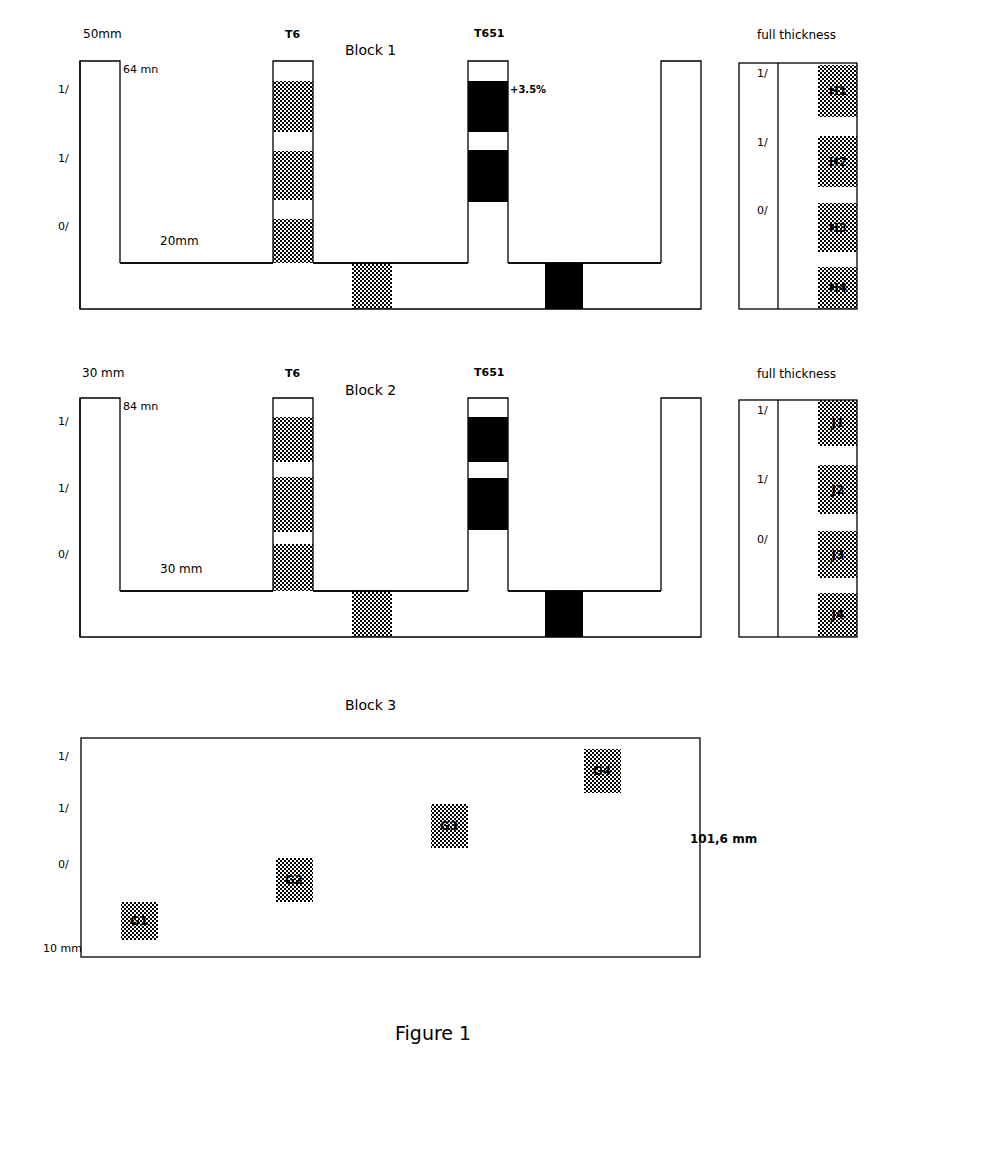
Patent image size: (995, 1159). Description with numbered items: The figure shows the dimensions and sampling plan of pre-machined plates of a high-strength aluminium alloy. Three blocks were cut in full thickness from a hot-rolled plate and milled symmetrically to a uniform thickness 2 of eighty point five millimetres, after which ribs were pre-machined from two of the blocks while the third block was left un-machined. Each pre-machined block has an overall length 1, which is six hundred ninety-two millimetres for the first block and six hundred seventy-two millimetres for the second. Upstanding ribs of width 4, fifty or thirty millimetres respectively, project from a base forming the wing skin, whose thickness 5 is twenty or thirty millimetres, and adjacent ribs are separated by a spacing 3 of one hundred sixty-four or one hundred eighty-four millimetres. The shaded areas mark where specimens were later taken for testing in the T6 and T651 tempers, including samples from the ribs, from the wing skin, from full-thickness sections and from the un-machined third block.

The block length dimension 1 is at (352, 370).
The block thickness dimension 2 is at (41, 349).
The rib spacing dimension 3 is at (390, 344).
The rib width dimension 4 is at (390, 326).
The wing skin thickness dimension 5 is at (390, 450).